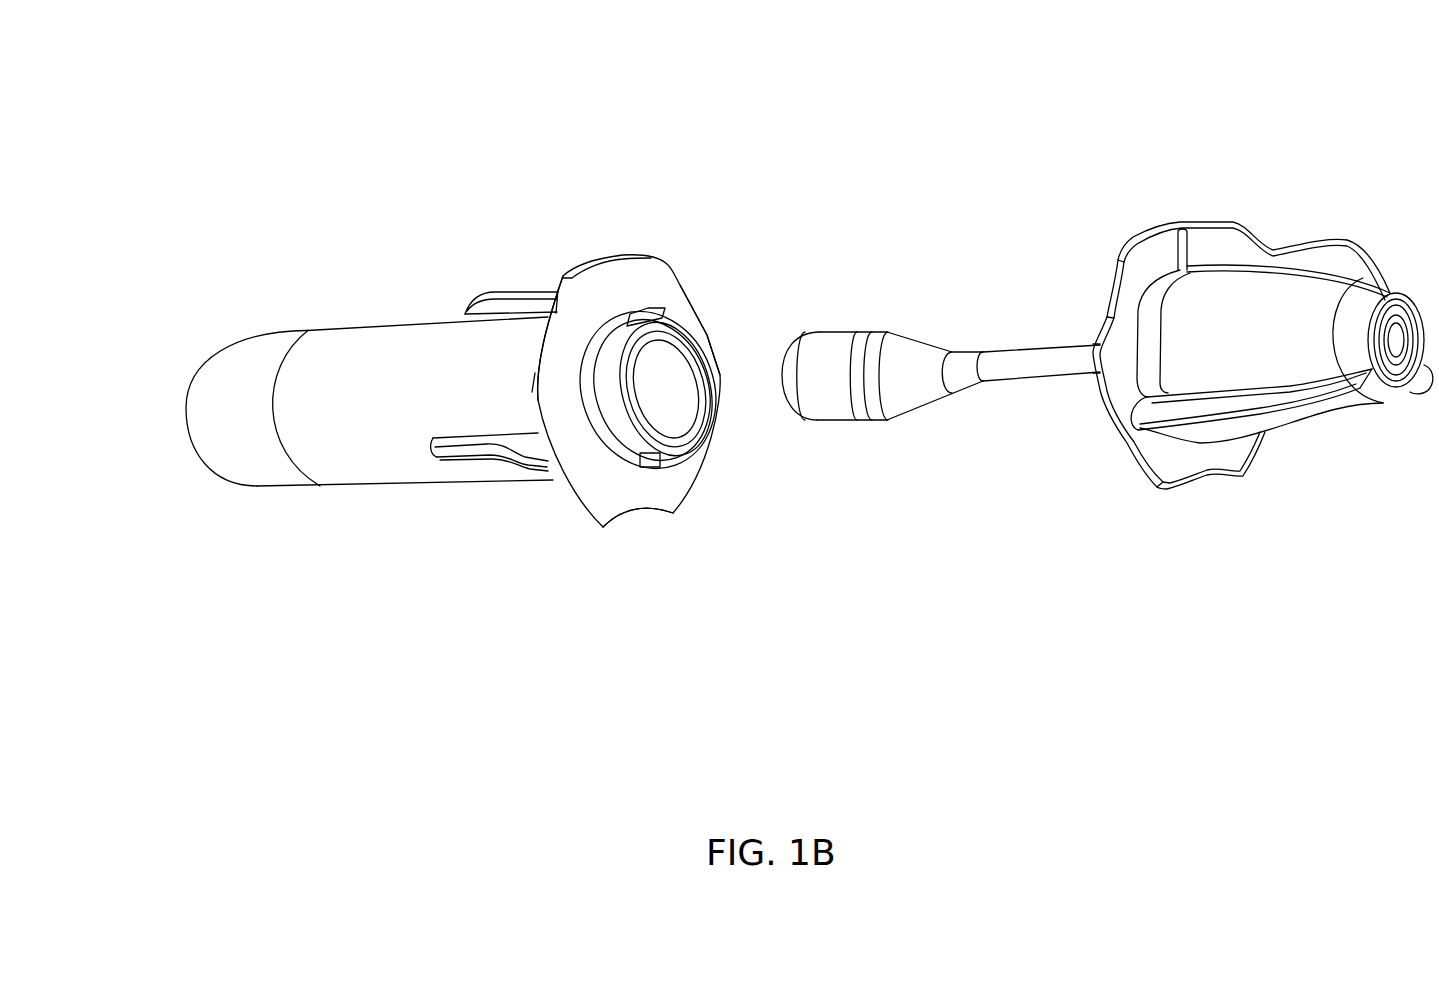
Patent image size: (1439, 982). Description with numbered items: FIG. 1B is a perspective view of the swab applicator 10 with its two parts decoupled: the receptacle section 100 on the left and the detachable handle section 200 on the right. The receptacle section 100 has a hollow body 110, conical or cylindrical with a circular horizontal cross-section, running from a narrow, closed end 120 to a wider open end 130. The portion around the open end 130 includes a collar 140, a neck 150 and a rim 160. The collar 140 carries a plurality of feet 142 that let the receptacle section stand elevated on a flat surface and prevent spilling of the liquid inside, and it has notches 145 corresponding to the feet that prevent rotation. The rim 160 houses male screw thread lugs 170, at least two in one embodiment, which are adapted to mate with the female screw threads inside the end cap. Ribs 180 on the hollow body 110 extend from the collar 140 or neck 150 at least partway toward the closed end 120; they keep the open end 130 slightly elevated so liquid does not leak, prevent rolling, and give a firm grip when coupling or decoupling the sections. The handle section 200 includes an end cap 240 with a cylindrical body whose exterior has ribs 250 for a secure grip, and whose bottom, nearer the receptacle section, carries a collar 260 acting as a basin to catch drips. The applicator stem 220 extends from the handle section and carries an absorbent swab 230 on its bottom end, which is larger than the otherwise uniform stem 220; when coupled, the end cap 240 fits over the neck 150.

The swab applicator 10 is at (950, 90).
The receptacle section 100 is at (560, 662).
The hollow body 110 is at (378, 470).
The narrow end 120 is at (205, 421).
The open end 130 is at (698, 413).
The collar 140 is at (648, 502).
The feet 142 is at (603, 527).
The notches 145 is at (550, 320).
The neck 150 is at (622, 432).
The rim 160 is at (657, 408).
The thread lugs 170 is at (653, 308).
The ribs 180 is at (520, 292).
The handle section 200 is at (1125, 573).
The applicator stem 220 is at (1035, 370).
The swab 230 is at (838, 407).
The end cap 240 is at (1345, 408).
The ribs 250 is at (1330, 235).
The collar 260 is at (1145, 257).